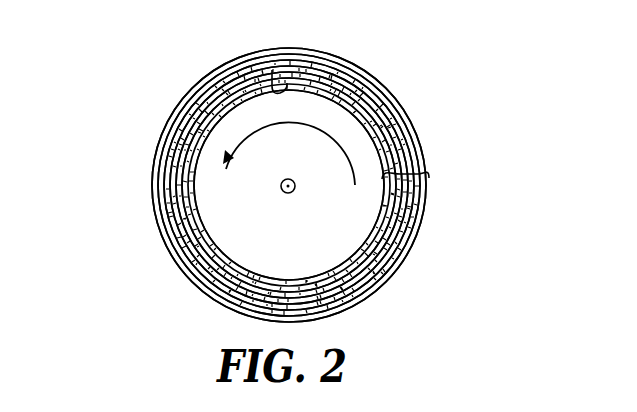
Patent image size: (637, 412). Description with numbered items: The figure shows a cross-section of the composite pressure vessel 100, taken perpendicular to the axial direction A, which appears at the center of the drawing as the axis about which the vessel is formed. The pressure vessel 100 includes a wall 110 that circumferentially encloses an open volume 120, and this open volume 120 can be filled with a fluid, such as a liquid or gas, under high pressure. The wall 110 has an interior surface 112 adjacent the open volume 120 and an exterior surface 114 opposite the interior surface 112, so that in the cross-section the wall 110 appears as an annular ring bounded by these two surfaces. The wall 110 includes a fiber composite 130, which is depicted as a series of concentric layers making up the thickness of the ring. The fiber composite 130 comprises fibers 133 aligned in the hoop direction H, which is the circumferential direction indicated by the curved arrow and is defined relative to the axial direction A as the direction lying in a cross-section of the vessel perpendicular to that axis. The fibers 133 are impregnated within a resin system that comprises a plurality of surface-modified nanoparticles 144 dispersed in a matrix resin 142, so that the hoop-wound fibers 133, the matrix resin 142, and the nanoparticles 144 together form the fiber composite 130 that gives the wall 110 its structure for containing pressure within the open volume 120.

The pressure vessel 100 is at (165, 72).
The exterior surface 114 is at (177, 105).
The interior surface 112 is at (272, 70).
The fibers 133 is at (352, 72).
The open volume 120 is at (352, 135).
The wall 110 is at (405, 182).
The surface-modified nanoparticles 144 is at (162, 226).
The fiber composite 130 is at (160, 257).
The matrix resin 142 is at (203, 287).
The hoop direction H is at (272, 122).
The axial direction A is at (289, 194).